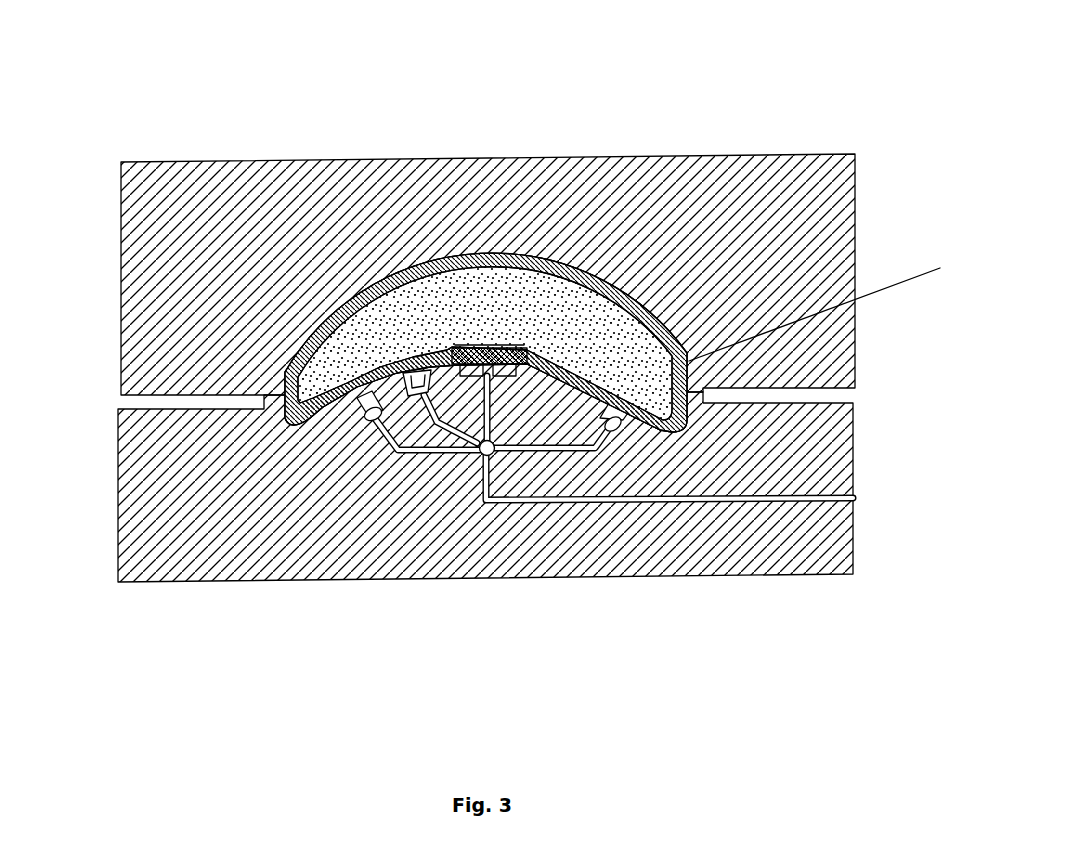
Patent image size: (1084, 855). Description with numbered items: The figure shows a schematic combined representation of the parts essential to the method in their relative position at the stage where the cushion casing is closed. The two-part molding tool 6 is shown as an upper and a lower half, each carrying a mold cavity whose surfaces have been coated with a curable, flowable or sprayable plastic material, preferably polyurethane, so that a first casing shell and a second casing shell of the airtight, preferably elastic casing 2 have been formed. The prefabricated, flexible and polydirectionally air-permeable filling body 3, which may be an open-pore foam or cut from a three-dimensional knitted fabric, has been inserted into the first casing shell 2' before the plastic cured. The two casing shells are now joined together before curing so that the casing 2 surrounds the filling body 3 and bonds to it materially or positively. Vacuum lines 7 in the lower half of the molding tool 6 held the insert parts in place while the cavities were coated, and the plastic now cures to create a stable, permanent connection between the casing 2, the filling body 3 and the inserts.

The casing 2 is at (408, 279).
The first casing shell 2' is at (352, 442).
The filling body 3 is at (487, 282).
The molding tool 6 is at (529, 425).
The vacuum lines 7 is at (425, 453).